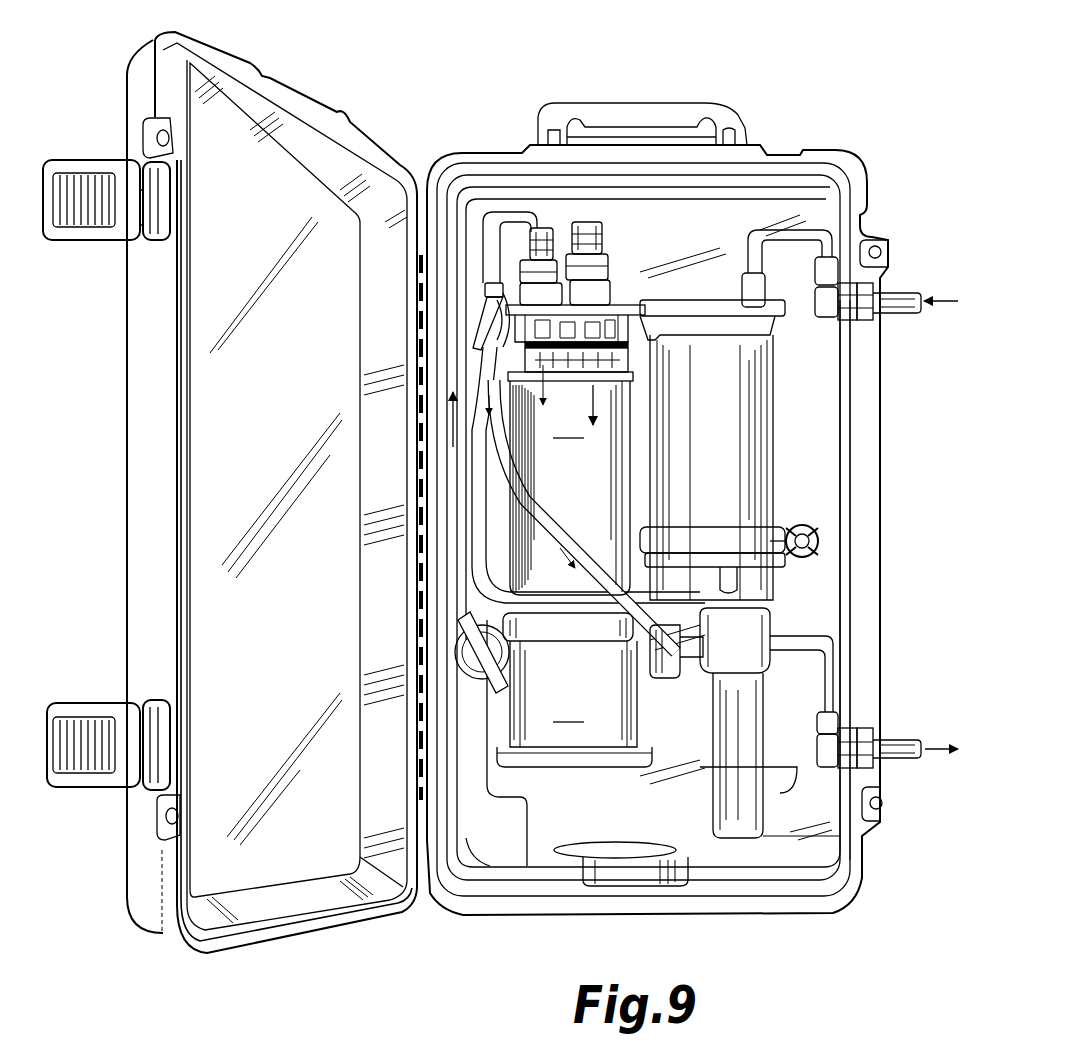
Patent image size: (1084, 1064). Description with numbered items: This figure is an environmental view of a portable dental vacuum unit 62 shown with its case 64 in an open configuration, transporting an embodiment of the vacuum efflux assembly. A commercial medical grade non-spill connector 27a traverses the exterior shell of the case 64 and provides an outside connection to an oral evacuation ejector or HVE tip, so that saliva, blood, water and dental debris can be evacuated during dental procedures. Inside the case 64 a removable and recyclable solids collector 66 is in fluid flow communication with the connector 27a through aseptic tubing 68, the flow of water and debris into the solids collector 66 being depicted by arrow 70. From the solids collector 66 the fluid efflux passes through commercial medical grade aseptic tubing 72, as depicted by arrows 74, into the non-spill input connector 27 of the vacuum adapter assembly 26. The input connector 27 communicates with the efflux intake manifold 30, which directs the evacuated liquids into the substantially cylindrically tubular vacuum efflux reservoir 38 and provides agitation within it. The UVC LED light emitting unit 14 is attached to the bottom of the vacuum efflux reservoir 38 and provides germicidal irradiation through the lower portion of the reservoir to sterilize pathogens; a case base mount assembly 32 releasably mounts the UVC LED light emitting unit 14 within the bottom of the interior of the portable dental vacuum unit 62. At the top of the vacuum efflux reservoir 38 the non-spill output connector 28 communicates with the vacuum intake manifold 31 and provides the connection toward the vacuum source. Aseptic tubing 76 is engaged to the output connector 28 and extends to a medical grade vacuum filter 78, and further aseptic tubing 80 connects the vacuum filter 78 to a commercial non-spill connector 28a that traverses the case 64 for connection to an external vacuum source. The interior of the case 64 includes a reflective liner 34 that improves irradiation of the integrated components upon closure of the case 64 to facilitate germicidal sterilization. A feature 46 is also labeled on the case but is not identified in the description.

The UVC LED light emitting unit 14 is at (579, 689).
The vacuum adapter assembly 26 is at (700, 403).
The input connector 27 is at (604, 278).
The non-spill connector 27a is at (903, 290).
The output connector 28 is at (555, 226).
The non-spill connector 28a is at (900, 737).
The efflux intake manifold 30 is at (525, 344).
The vacuum intake manifold 31 is at (492, 290).
The case base mount assembly 32 is at (670, 888).
The reflective liner 34 is at (274, 207).
The vacuum efflux reservoir 38 is at (570, 488).
The handle 46 is at (734, 92).
The portable dental vacuum unit 62 is at (899, 210).
The case 64 is at (886, 428).
The solids collector 66 is at (740, 433).
The aseptic tubing 68 is at (802, 230).
The arrow 70 is at (956, 303).
The aseptic tubing 72 is at (455, 577).
The arrows 74 is at (800, 540).
The aseptic tubing 76 is at (507, 208).
The vacuum filter 78 is at (880, 765).
The aseptic tubing 80 is at (825, 636).